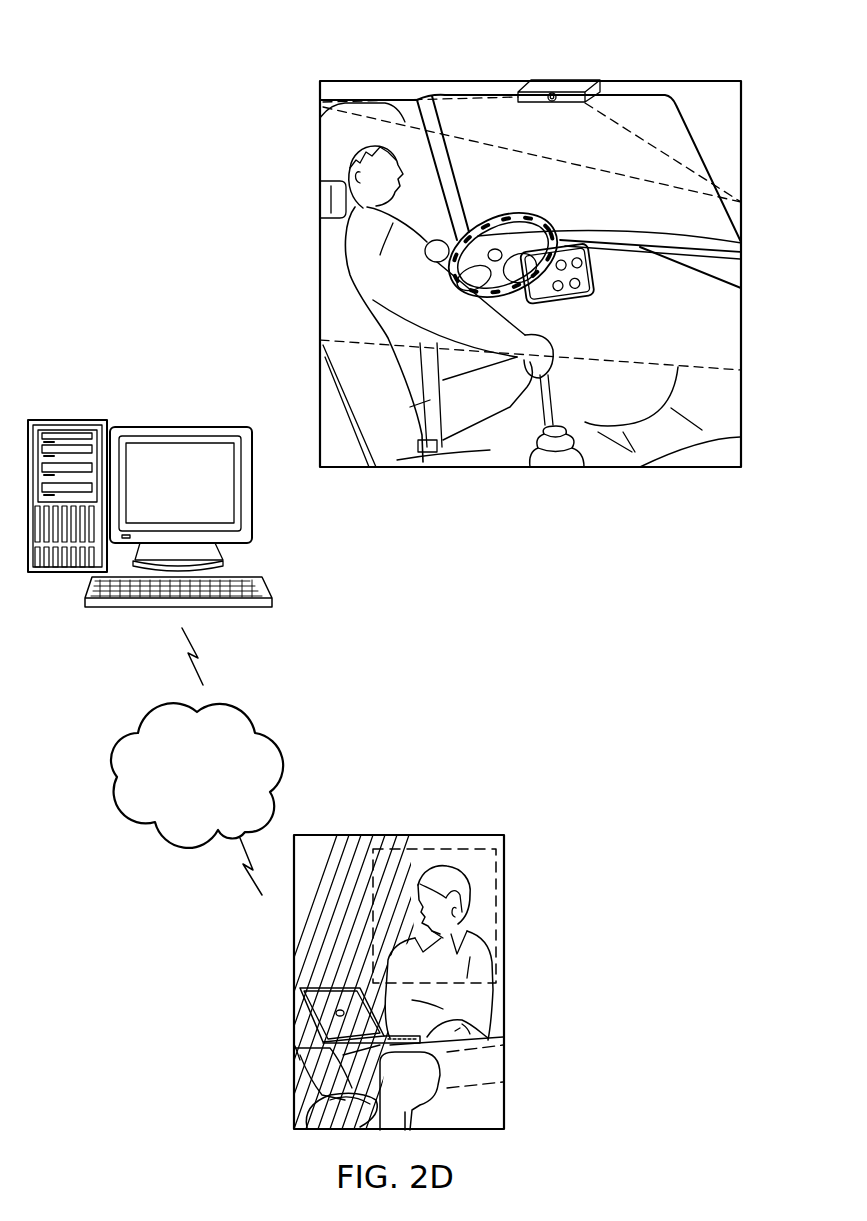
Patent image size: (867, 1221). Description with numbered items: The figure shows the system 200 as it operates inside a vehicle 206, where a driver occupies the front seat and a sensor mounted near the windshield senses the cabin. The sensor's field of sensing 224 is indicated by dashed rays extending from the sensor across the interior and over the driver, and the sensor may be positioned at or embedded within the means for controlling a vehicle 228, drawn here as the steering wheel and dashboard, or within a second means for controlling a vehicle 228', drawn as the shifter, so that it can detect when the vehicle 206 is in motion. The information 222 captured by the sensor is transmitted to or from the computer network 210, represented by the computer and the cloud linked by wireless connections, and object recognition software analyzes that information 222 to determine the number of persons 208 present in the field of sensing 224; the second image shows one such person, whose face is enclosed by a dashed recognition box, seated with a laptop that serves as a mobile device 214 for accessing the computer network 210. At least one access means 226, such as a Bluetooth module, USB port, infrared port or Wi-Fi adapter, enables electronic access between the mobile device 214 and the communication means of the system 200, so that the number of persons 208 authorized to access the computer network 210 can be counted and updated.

The system 200 is at (518, 62).
The vehicle 206 is at (768, 70).
The number of persons 208 is at (472, 850).
The computer network 210 is at (276, 420).
The mobile device 214 is at (468, 1018).
The information 222 is at (197, 775).
The field of sensing 224 is at (398, 100).
The access means 226 is at (293, 1085).
The means for controlling a vehicle 228 is at (662, 276).
The means for controlling a vehicle 228' is at (613, 446).